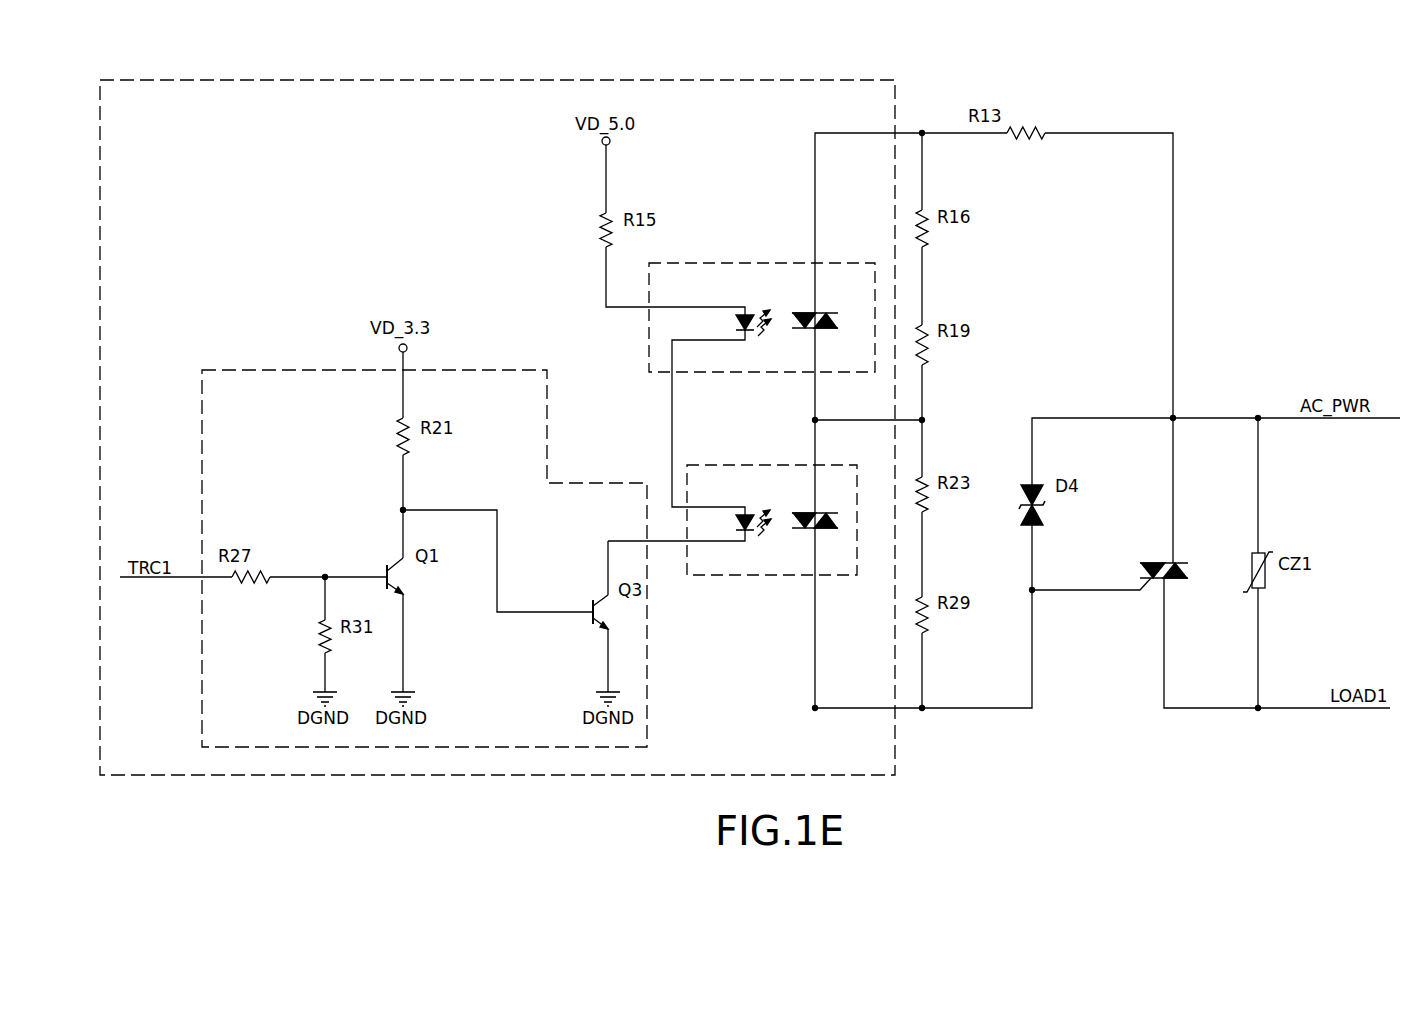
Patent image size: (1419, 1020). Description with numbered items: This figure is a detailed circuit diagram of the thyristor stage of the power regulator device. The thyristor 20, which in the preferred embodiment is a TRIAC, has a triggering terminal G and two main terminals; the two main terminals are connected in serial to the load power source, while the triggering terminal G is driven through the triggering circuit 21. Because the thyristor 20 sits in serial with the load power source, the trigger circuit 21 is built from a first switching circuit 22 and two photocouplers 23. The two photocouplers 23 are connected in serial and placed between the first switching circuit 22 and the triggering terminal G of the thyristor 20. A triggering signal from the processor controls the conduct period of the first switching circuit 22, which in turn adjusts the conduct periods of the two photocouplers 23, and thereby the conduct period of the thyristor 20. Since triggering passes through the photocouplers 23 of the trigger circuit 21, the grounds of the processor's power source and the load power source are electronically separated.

The thyristor 20 is at (1170, 580).
The triggering circuit 21 is at (457, 80).
The first switching circuit 22 is at (325, 368).
The photocouplers 23 is at (648, 370).